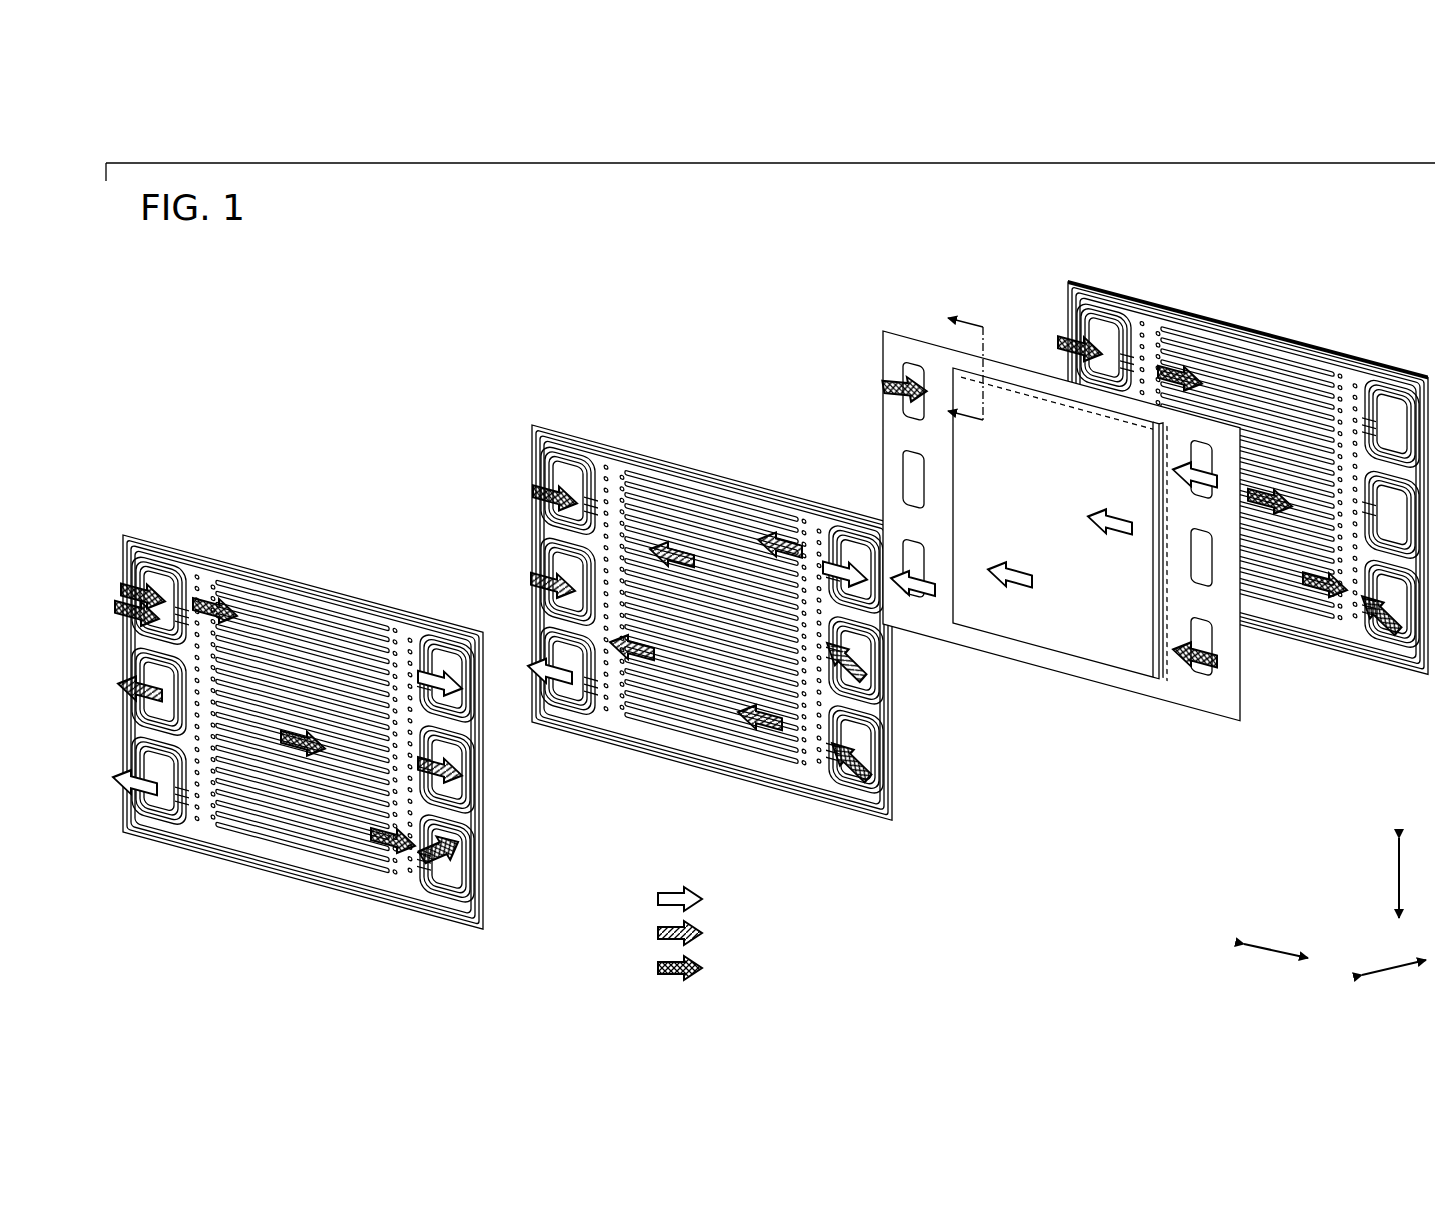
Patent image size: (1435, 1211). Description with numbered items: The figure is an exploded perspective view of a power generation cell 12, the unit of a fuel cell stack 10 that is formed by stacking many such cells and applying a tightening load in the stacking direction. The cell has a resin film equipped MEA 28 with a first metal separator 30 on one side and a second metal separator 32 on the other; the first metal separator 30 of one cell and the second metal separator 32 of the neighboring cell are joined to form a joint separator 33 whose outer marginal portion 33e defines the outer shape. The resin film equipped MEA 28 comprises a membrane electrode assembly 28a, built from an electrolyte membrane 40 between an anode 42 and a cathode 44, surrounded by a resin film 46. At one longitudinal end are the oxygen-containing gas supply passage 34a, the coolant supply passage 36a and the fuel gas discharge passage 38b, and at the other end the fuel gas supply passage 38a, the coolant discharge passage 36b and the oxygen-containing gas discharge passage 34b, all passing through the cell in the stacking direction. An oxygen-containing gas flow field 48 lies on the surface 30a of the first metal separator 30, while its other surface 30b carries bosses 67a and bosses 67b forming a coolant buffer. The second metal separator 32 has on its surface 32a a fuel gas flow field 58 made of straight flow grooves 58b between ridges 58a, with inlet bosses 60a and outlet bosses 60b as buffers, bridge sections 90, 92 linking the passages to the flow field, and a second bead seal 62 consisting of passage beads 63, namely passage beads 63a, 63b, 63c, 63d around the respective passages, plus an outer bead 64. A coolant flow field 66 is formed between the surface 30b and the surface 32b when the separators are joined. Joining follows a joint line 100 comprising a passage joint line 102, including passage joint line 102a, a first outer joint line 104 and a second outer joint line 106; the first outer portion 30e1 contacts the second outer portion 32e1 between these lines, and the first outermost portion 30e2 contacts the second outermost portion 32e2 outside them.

The fuel cell stack 10 is at (336, 217).
The power generation cell 12 is at (510, 230).
The resin film equipped MEA 28 is at (883, 327).
The membrane electrode assembly 28a is at (1129, 672).
The first metal separator 30 is at (532, 421).
The surface of the first metal separator 30a is at (768, 795).
The surface of the first metal separator 30b is at (745, 770).
The first outer portion 30e1 is at (714, 480).
The first outermost portion 30e2 is at (642, 458).
The second metal separator 32 is at (153, 543).
The surface of the second metal separator 32a is at (278, 855).
The surface of the second metal separator 32b is at (303, 860).
The second outer portion 32e1 is at (190, 577).
The second outermost portion 32e2 is at (145, 566).
The joint separator 33 is at (396, 452).
The outer marginal portion 33e is at (1069, 300).
The oxygen-containing gas supply passage 34a is at (458, 683).
The oxygen-containing gas discharge passage 34b is at (556, 660).
The coolant supply passage 36a is at (462, 790).
The coolant discharge passage 36b is at (150, 790).
The fuel gas supply passage 38a is at (168, 596).
The fuel gas discharge passage 38b is at (450, 872).
The electrolyte membrane 40 is at (1100, 650).
The anode 42 is at (1168, 670).
The cathode 44 is at (1027, 640).
The resin film 46 is at (1060, 658).
The oxygen-containing gas flow field 48 is at (700, 780).
The fuel gas flow field 58 is at (372, 518).
The ridges 58a is at (313, 628).
The straight flow grooves 58b is at (346, 628).
The bosses 60a is at (215, 834).
The bosses 60b is at (410, 895).
The second bead seal 62 is at (543, 928).
The passage beads 63 is at (1395, 615).
The passage bead 63a is at (243, 492).
The passage bead 63b is at (502, 971).
The passage bead 63c is at (522, 822).
The passage bead 63d is at (207, 923).
The outer bead 64 is at (478, 880).
The coolant flow field 66 is at (660, 740).
The bosses 67a is at (800, 770).
The bosses 67b is at (610, 730).
The bridge section 90 is at (180, 600).
The bridge section 92 is at (425, 880).
The joint line 100 is at (378, 575).
The passage joint line 102 is at (458, 653).
The passage joint line 102a is at (432, 549).
The first outer joint line 104 is at (440, 628).
The second outer joint line 106 is at (395, 623).